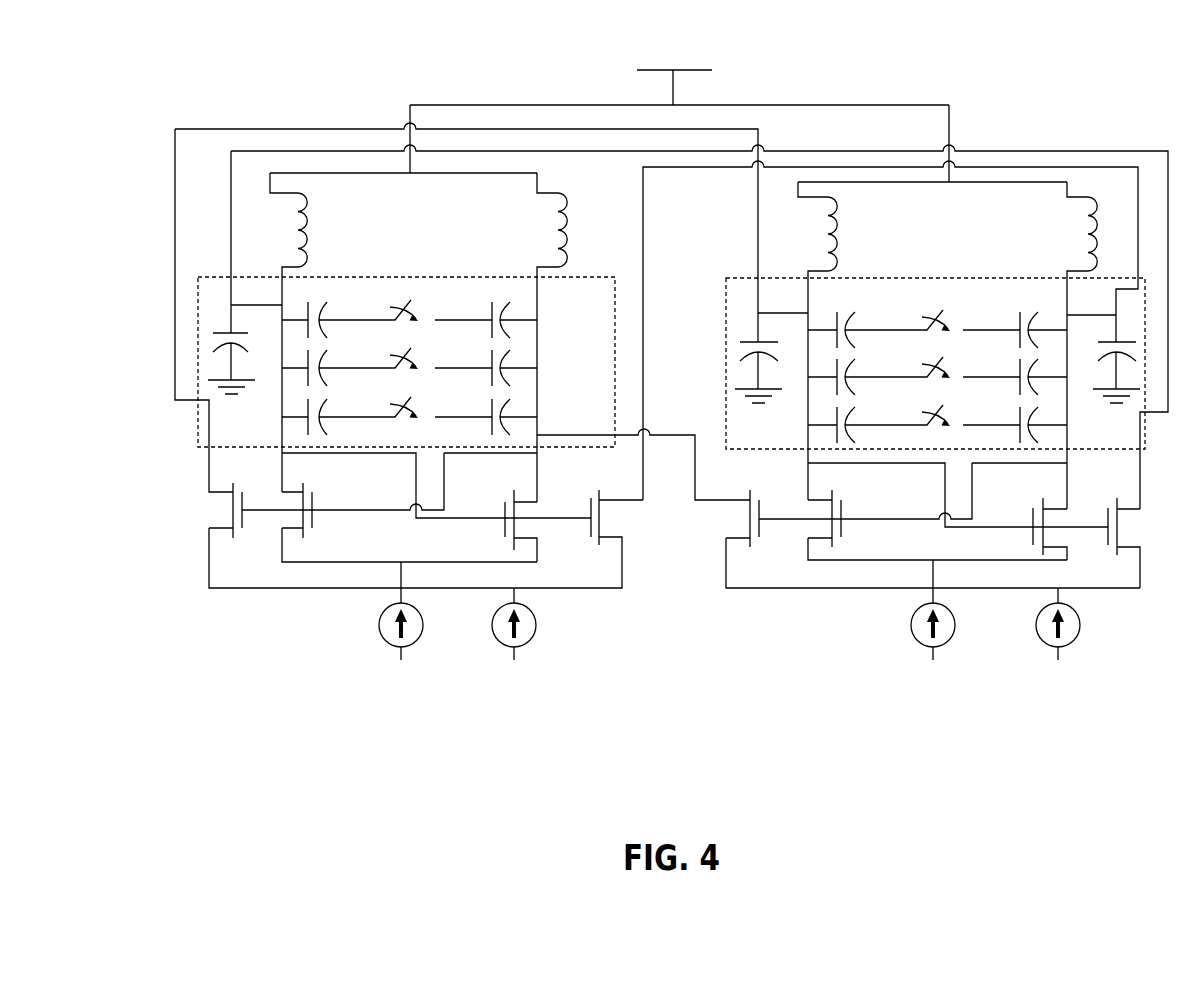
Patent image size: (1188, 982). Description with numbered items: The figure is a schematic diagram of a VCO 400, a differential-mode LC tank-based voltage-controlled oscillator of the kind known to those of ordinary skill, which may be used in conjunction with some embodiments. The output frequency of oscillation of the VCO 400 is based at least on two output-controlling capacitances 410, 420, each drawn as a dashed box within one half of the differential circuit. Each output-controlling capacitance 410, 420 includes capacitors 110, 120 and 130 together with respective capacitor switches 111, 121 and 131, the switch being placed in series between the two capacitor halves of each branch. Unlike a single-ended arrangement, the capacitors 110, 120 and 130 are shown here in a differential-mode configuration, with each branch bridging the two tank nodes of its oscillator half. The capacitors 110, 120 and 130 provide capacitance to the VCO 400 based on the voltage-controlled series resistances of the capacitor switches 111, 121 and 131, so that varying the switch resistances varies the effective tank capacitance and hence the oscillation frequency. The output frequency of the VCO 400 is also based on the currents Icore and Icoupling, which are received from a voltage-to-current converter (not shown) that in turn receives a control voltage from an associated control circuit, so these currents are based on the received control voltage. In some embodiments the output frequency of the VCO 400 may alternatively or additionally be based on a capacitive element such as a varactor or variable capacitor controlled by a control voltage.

The VCO 400 is at (1057, 87).
The output-controlling capacitance 410 is at (567, 277).
The output-controlling capacitance 420 is at (741, 278).
The capacitor 110 is at (674, 318).
The capacitor switch 111 is at (675, 306).
The capacitor 120 is at (674, 367).
The capacitor switch 121 is at (675, 354).
The capacitor 130 is at (674, 416).
The capacitor switch 131 is at (675, 402).